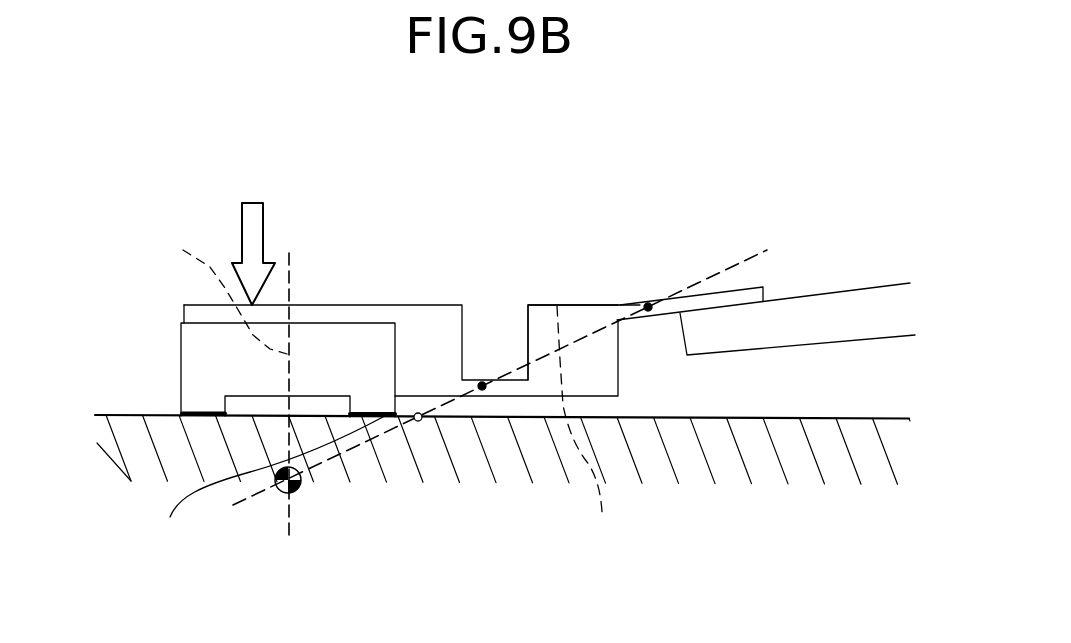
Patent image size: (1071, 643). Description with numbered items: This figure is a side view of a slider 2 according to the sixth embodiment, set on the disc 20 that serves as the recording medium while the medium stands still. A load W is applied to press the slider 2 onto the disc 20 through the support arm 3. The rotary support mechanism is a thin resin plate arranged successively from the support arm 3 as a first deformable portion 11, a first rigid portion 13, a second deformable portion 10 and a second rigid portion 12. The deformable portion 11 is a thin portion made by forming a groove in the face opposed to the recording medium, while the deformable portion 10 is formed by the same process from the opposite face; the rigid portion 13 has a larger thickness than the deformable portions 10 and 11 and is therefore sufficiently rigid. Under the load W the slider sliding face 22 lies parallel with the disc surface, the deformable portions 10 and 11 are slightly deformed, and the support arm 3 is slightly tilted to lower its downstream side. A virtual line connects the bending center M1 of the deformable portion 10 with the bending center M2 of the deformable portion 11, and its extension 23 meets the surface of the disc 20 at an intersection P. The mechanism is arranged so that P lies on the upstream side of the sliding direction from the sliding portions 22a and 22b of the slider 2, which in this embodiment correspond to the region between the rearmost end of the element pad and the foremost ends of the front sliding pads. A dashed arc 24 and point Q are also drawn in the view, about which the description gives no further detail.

The slider 2 is at (184, 346).
The support arm 3 is at (818, 303).
The second deformable portion 10 is at (482, 384).
The first deformable portion 11 is at (620, 304).
The second rigid portion 12 is at (460, 295).
The first rigid portion 13 is at (556, 312).
The disc 20 is at (746, 458).
The slider sliding face 22 is at (204, 416).
The sliding portion 22a is at (181, 414).
The sliding portion 22b is at (399, 417).
The extension of virtual line 23 is at (588, 430).
The arc line 24 is at (215, 294).
The load W is at (253, 232).
The intersection P is at (421, 422).
The center point Q is at (277, 396).
The bending center of the deformable portion 10 M1 is at (483, 390).
The bending center of the deformable portion 11 M2 is at (648, 307).